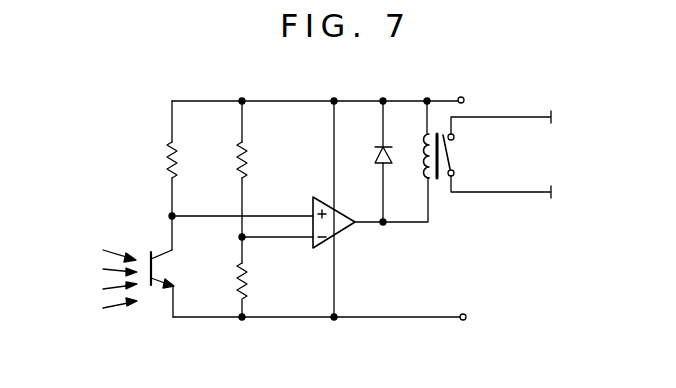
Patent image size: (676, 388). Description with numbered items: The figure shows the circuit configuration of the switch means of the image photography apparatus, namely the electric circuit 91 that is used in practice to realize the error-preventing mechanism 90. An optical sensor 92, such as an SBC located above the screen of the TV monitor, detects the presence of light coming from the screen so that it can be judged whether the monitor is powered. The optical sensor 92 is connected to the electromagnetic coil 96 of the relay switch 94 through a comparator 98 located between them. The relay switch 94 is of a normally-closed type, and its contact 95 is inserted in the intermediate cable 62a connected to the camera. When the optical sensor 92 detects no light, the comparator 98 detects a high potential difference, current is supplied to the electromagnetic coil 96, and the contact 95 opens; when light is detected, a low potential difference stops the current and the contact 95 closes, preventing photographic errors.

The error-preventing mechanism 90 is at (191, 83).
The electric circuit 91 is at (279, 330).
The optical sensor 92 is at (148, 250).
The relay switch 94 is at (444, 200).
The contact 95 is at (455, 158).
The electromagnetic coil 96 is at (421, 178).
The comparator 98 is at (340, 231).
The intermediate cable 62a is at (549, 112).